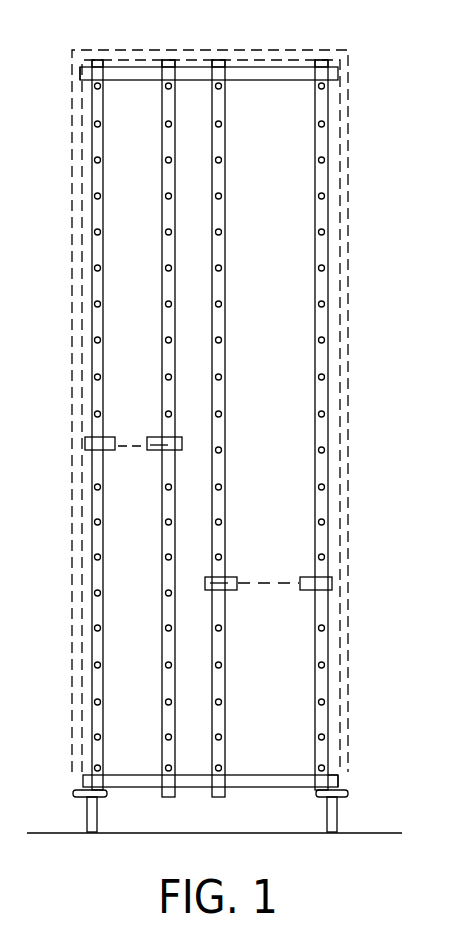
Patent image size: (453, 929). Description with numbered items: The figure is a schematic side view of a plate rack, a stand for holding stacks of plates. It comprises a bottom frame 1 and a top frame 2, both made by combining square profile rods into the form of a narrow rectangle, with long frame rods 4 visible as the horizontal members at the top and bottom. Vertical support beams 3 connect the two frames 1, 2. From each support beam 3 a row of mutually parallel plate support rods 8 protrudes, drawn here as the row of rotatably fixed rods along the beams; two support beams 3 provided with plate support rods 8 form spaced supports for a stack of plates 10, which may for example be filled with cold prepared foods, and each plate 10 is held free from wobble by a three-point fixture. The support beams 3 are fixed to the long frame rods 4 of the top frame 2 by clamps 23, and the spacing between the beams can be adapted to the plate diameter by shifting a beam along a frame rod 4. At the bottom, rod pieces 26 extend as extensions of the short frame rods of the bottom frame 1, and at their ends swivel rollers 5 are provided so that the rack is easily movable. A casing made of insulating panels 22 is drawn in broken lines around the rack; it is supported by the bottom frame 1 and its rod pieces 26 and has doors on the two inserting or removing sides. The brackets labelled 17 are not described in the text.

The bottom frame 1 is at (222, 435).
The top frame 2 is at (107, 91).
The support beam 3 is at (98, 293).
The long frame rod 4 is at (143, 72).
The roller 5 is at (352, 812).
The plate support rod 8 is at (165, 663).
The plate 10 is at (128, 448).
The brackets 17 is at (155, 440).
The insulating panel 22 is at (75, 180).
The clamp 23 is at (213, 73).
The rod piece 26 is at (338, 773).